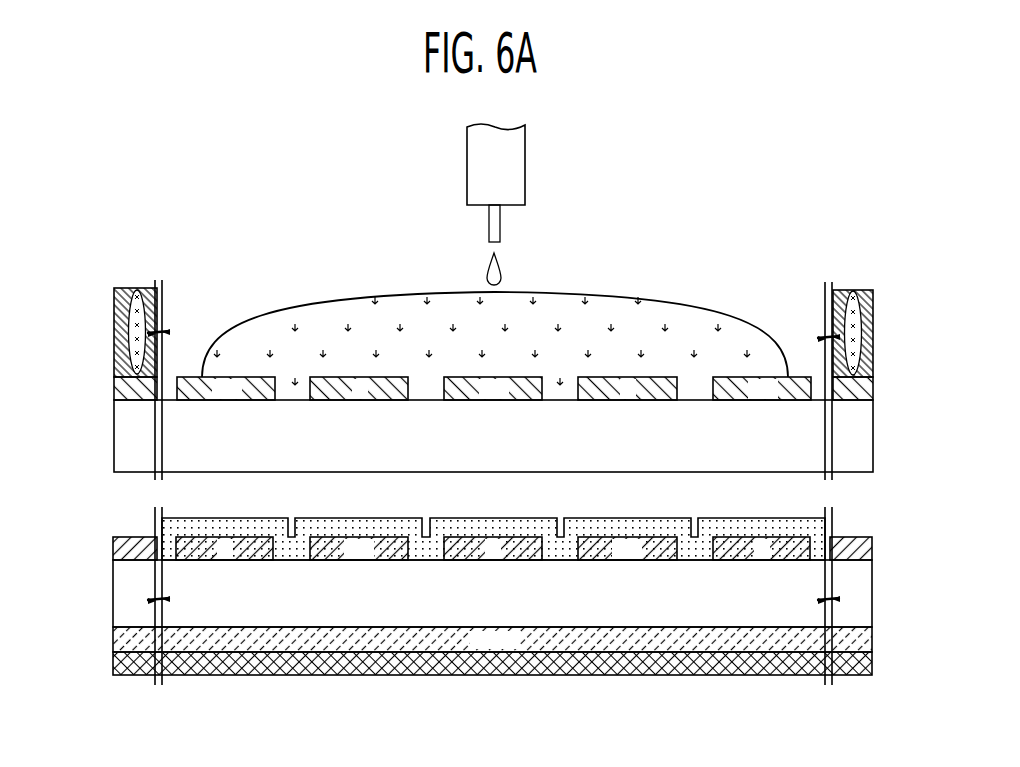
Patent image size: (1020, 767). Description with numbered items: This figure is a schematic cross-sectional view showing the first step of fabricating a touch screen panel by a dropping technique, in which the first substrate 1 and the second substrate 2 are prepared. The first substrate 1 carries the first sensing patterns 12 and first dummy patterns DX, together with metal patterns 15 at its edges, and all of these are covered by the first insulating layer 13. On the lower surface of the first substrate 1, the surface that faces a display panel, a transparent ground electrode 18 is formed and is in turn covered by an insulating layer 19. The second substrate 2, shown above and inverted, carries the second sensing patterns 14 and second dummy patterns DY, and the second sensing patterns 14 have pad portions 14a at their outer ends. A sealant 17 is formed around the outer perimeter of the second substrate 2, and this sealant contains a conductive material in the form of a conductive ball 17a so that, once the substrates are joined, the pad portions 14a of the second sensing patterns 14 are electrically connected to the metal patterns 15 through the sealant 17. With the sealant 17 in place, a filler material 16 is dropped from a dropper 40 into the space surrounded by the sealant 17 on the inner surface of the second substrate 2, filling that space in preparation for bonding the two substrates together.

The dropper 40 is at (518, 166).
The filler material 16 is at (668, 330).
The sealant 17 is at (114, 322).
The conductive ball 17a is at (133, 356).
The pad portions 14a is at (117, 388).
The second substrate 2 is at (117, 436).
The second sensing patterns 14 is at (655, 383).
The first insulating layer 13 is at (173, 522).
The metal patterns 15 is at (117, 552).
The first sensing patterns 12 is at (742, 548).
The first substrate 1 is at (117, 596).
The transparent ground electrode 18 is at (117, 638).
The insulating layer 19 is at (117, 668).